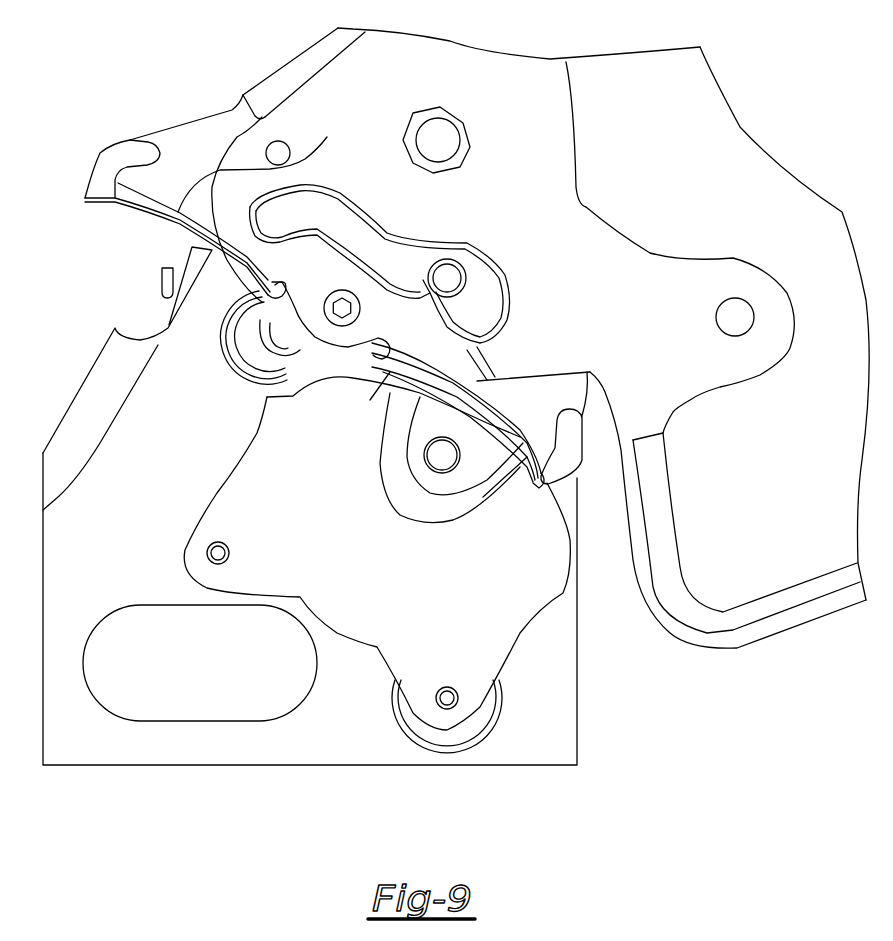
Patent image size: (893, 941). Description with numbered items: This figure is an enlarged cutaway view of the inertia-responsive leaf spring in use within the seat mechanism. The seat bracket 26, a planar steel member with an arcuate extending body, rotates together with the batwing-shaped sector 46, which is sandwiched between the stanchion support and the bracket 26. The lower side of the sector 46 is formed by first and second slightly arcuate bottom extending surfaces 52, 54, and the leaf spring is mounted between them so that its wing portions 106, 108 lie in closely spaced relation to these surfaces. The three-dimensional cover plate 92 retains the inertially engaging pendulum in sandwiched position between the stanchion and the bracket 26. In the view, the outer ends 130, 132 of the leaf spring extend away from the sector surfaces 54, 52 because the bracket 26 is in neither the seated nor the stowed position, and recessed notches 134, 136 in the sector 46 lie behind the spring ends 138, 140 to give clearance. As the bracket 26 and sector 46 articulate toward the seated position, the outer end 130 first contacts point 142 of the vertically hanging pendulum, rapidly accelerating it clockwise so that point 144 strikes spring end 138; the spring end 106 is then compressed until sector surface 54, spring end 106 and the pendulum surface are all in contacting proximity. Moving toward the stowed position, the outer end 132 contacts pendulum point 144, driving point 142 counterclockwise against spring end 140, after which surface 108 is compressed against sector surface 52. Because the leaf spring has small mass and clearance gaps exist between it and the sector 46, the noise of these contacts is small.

The bracket 26 is at (677, 173).
The sector 46 is at (213, 133).
The first bottom extending surface 52 is at (163, 197).
The second bottom extending surface 54 is at (540, 413).
The three-dimensional cover plate 92 is at (378, 572).
The first outwardly extending wing portion 106 is at (470, 420).
The second outwardly extending wing portion 108 is at (320, 148).
The outer end of leaf spring 130 is at (570, 480).
The outer end of leaf spring 132 is at (78, 193).
The recessed notch 134 is at (380, 357).
The recessed notch 136 is at (271, 280).
The leaf spring end 138 is at (380, 350).
The leaf spring end 140 is at (282, 295).
The point of pendulum 142 is at (541, 480).
The point of pendulum 144 is at (387, 390).